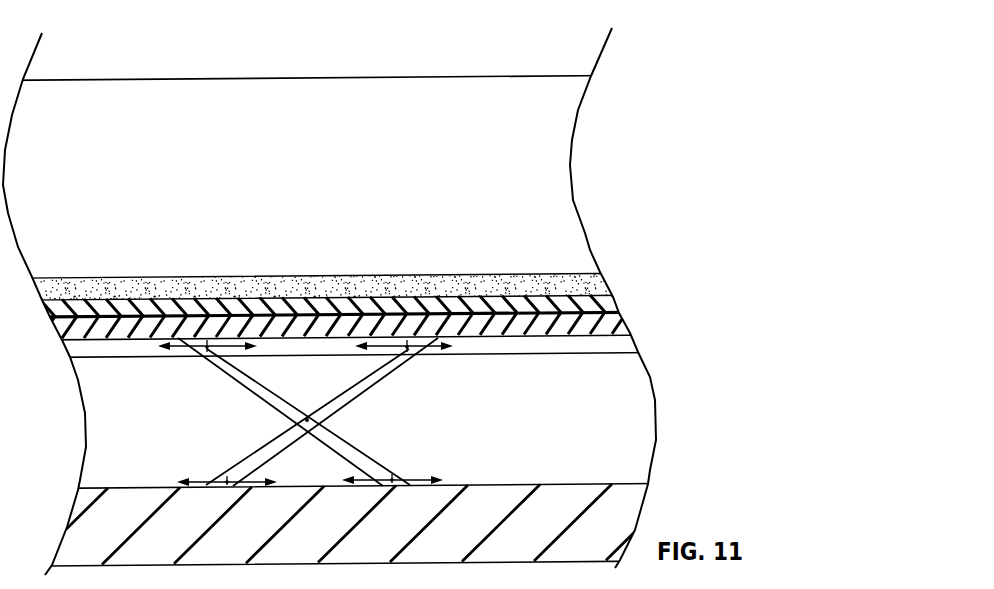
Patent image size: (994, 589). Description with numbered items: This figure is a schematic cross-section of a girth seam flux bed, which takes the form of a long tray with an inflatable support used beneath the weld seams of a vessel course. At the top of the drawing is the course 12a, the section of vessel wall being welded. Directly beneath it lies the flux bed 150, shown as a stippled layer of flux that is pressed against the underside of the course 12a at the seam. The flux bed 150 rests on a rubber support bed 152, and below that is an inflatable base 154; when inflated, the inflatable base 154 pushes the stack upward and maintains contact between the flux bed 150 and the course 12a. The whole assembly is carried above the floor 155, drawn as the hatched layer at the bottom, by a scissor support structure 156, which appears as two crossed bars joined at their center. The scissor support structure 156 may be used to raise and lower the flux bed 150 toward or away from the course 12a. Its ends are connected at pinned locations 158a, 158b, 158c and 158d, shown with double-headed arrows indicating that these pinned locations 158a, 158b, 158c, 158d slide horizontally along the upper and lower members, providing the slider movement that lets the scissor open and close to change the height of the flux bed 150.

The course 12a is at (326, 166).
The flux bed 150 is at (596, 279).
The rubber support bed 152 is at (610, 306).
The inflatable base 154 is at (620, 324).
The floor 155 is at (612, 508).
The scissor support structure 156 is at (382, 378).
The pinned location 158a is at (207, 352).
The pinned location 158b is at (226, 479).
The pinned location 158c is at (411, 352).
The pinned location 158d is at (393, 478).